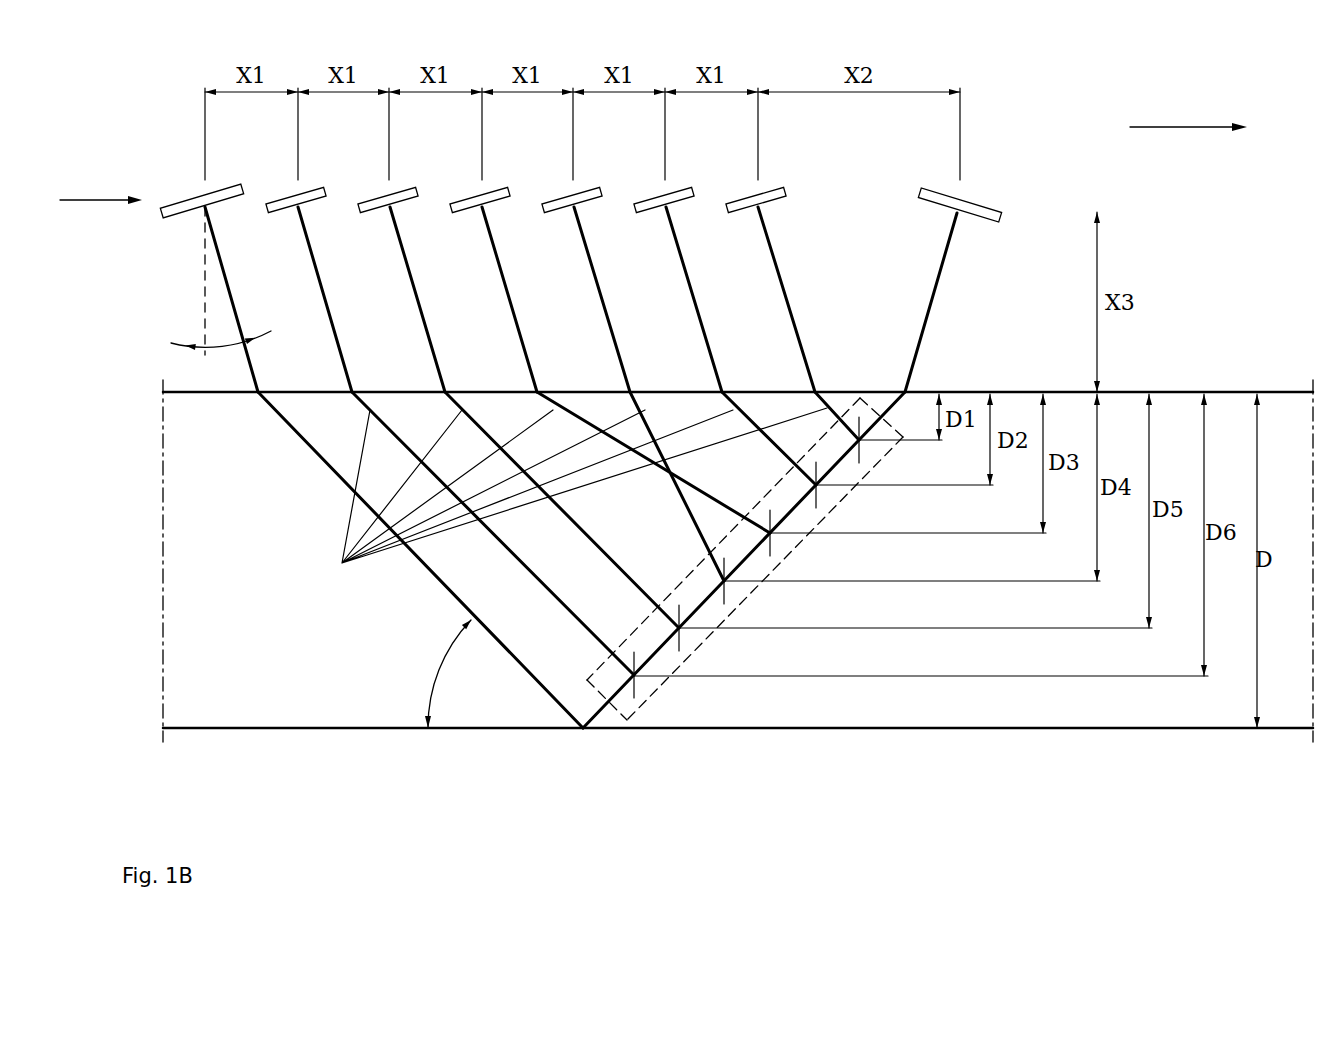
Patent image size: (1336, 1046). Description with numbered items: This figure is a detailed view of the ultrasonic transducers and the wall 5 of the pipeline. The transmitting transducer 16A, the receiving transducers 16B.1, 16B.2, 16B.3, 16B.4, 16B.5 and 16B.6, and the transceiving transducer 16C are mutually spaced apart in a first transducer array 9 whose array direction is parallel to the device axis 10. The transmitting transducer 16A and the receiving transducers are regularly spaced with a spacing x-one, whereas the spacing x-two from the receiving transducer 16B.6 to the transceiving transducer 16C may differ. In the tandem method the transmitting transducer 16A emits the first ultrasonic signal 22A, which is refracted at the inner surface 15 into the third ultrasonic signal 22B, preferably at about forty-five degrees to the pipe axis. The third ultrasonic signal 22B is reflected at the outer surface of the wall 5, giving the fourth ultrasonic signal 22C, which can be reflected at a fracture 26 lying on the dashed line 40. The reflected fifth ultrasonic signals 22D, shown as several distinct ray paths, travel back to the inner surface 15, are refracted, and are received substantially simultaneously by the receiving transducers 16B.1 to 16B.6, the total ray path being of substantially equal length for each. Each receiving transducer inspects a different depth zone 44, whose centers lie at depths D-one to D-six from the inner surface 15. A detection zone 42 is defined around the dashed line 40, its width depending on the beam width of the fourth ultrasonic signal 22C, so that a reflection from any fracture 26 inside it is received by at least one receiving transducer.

The wall 5 is at (1164, 697).
The first transducer array 9 is at (88, 200).
The device axis 10 is at (1179, 127).
The inner surface 15 is at (1179, 392).
The transmitting transducer 16A is at (193, 169).
The receiving transducer 16B.1 is at (274, 167).
The receiving transducer 16B.2 is at (366, 167).
The receiving transducer 16B.3 is at (458, 167).
The receiving transducer 16B.4 is at (550, 167).
The receiving transducer 16B.5 is at (642, 167).
The receiving transducer 16B.6 is at (734, 167).
The transceiving transducer 16C is at (970, 171).
The first ultrasonic signal 22A is at (233, 302).
The third ultrasonic signal 22B is at (517, 665).
The fourth ultrasonic signal 22C is at (601, 712).
The fifth ultrasonic signal 22D is at (564, 500).
The fracture 26 is at (732, 604).
The dashed line 40 is at (706, 610).
The detection zone 42 is at (654, 695).
The depth zone 44 is at (1097, 676).